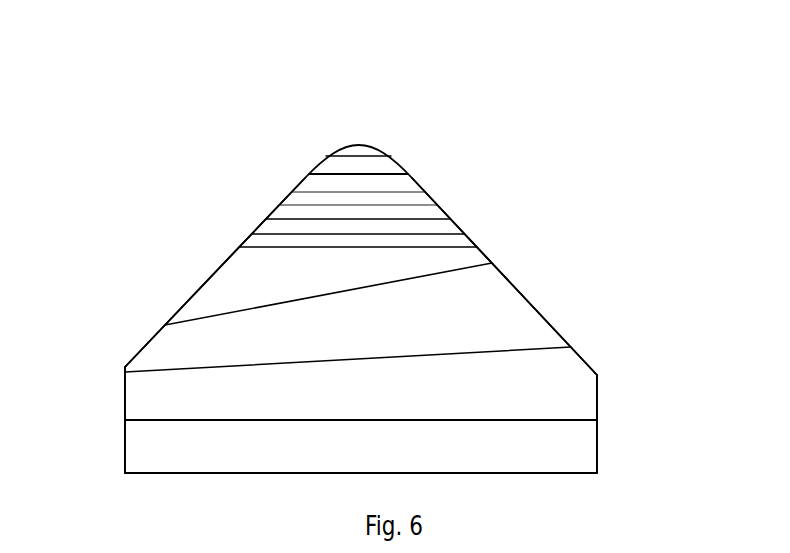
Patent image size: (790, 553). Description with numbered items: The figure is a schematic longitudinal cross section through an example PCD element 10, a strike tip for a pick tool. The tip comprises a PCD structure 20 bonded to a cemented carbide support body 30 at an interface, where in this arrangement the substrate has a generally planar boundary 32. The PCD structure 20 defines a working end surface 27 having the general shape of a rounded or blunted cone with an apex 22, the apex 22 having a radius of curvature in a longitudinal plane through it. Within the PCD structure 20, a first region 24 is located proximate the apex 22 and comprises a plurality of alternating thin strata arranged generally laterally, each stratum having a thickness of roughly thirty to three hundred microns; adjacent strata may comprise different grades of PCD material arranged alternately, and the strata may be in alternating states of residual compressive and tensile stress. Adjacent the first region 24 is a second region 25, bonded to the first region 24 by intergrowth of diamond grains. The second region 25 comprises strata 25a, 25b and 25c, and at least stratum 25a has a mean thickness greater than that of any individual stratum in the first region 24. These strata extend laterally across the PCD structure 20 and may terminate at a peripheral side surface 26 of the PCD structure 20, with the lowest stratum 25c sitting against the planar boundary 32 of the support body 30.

The PCD element 10 is at (177, 133).
The PCD structure 20 is at (410, 177).
The apex 22 is at (363, 145).
The first region 24 is at (411, 220).
The second region 25 is at (441, 313).
The stratum 25a is at (170, 353).
The stratum 25b is at (249, 282).
The stratum 25c is at (160, 400).
The peripheral side surface 26 is at (597, 397).
The working end surface 27 is at (548, 320).
The cemented carbide support body 30 is at (597, 435).
The interface boundary 32 is at (493, 420).